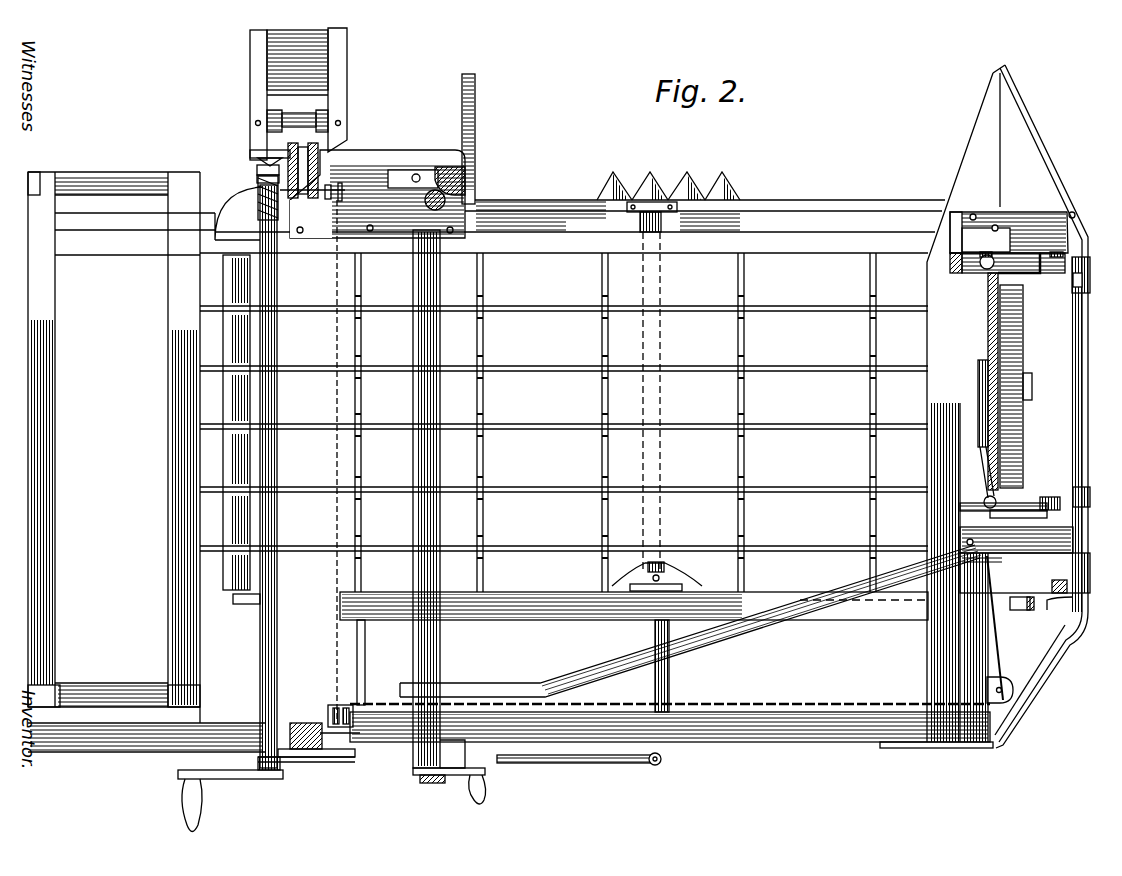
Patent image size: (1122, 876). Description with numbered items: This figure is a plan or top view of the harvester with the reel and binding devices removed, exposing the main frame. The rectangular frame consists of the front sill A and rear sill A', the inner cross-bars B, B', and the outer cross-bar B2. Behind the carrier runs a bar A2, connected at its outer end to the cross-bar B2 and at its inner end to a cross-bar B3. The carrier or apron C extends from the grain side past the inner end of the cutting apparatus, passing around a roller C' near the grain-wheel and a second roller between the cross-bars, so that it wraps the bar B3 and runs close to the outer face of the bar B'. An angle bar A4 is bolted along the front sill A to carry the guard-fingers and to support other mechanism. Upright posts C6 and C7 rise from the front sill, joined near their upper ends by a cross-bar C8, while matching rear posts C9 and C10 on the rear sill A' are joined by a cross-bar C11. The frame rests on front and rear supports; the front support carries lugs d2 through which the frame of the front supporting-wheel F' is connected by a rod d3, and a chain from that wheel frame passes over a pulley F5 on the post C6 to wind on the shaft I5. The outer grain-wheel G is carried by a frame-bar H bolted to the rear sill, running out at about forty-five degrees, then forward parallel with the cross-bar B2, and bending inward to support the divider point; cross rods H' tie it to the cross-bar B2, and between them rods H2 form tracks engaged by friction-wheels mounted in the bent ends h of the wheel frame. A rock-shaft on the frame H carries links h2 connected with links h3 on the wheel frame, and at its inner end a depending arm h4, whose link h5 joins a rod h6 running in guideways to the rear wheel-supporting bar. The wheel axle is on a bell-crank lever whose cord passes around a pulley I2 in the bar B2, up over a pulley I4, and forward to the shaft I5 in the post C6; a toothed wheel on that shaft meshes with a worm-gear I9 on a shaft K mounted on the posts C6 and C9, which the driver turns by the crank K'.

The front sill A is at (486, 439).
The rear sill A' is at (671, 694).
The bar A2 is at (572, 608).
The angle bar A4 is at (98, 222).
The inner cross-bar B is at (146, 705).
The inner cross-bar B' is at (128, 704).
The outer cross-bar B2 is at (927, 659).
The cross-bar B3 is at (360, 660).
The carrier or apron C is at (564, 382).
The roller C' is at (242, 615).
The upright post C6 is at (318, 178).
The upright post C7 is at (476, 178).
The cross-bar C8 is at (410, 160).
The rear post C9 is at (305, 750).
The rear post C10 is at (488, 770).
The cross-bar C11 is at (386, 750).
The front supporting-wheel F' is at (297, 94).
The pulley F5 is at (285, 145).
The lugs or ears d2 is at (268, 116).
The rod or shaft d3 is at (300, 118).
The shaft I5 is at (257, 180).
The worm-gear I9 is at (262, 195).
The pulley I4 is at (330, 706).
The pulley I2 is at (1006, 680).
The shaft K is at (254, 476).
The crank or handle K' is at (266, 794).
The frame or bar H is at (1018, 406).
The cross rods or bars H' is at (1012, 382).
The rods H2 is at (960, 276).
The bent ends h is at (1050, 276).
The rod or link h2 is at (1100, 507).
The links h3 is at (1020, 502).
The bent depending arm h4 is at (1058, 586).
The link h5 is at (1015, 255).
The rod h6 is at (690, 621).
The outer grain-wheel G is at (1025, 348).